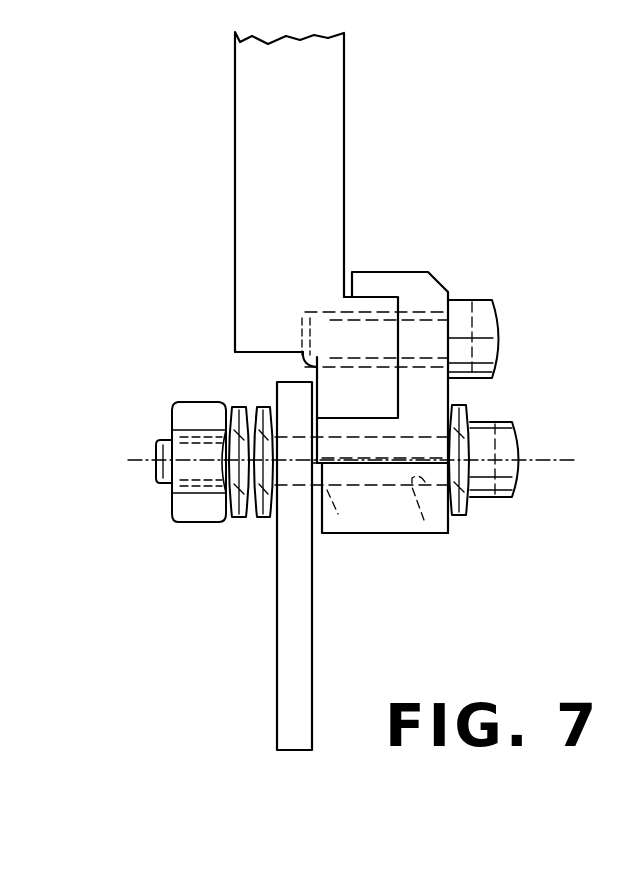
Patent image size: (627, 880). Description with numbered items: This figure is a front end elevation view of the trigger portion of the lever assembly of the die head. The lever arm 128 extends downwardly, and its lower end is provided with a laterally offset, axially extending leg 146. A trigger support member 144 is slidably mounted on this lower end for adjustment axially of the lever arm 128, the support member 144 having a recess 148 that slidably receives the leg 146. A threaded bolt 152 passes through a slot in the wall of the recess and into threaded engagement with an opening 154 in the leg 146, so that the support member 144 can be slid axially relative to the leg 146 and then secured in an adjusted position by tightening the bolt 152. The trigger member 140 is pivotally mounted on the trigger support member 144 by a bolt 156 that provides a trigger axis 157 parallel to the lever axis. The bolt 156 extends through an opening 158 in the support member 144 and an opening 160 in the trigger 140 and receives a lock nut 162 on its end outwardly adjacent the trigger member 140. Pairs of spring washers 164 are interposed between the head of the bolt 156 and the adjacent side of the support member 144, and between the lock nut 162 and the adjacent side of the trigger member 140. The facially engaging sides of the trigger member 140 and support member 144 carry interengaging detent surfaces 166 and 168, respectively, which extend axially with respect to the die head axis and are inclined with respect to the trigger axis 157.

The lever arm 128 is at (310, 150).
The trigger member 140 is at (290, 668).
The trigger support member 144 is at (377, 533).
The leg 146 is at (400, 398).
The recess 148 is at (378, 345).
The threaded bolt 152 is at (475, 300).
The opening 154 is at (313, 318).
The bolt 156 is at (522, 450).
The trigger axis 157 is at (160, 470).
The opening 158 is at (424, 520).
The opening 160 is at (338, 514).
The lock nut 162 is at (187, 413).
The spring washers 164 is at (263, 403).
The detent surface 166 is at (313, 465).
The detent surface 168 is at (312, 468).